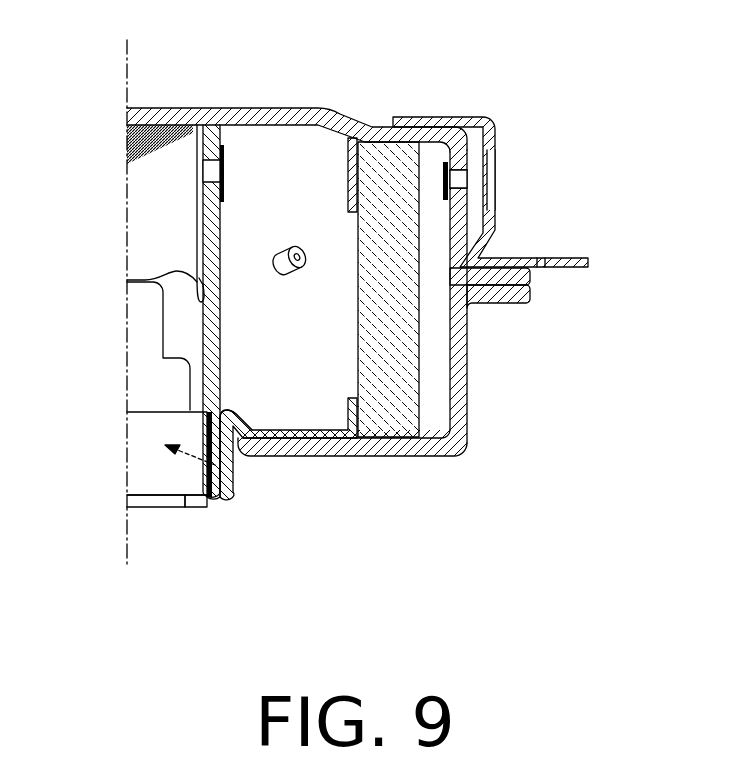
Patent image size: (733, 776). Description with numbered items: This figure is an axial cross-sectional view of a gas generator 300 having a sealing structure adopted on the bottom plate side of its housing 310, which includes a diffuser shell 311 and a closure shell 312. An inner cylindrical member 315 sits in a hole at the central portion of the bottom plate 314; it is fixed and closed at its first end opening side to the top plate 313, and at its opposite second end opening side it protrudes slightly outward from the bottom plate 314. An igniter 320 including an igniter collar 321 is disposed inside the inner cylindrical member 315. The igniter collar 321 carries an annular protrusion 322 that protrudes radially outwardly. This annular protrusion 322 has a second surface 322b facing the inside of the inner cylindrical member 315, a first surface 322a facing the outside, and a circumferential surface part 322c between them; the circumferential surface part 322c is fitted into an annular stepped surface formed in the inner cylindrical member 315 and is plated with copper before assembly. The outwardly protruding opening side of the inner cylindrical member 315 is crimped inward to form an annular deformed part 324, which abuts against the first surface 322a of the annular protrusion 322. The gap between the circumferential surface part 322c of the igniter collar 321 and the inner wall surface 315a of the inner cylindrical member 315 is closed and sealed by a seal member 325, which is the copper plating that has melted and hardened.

The gas generator 300 is at (253, 101).
The housing 310 is at (608, 333).
The diffuser shell 311 is at (498, 275).
The closure shell 312 is at (467, 393).
The top plate 313 is at (302, 108).
The bottom plate 314 is at (340, 457).
The inner cylindrical member 315 is at (222, 221).
The inner wall surface 315a is at (197, 343).
The igniter 320 is at (135, 313).
The igniter collar 321 is at (135, 422).
The annular protrusion 322 is at (235, 468).
The first surface 322a is at (192, 495).
The second surface 322b is at (215, 378).
The circumferential surface part 322c is at (218, 412).
The annular deformed part 324 is at (208, 502).
The seal member 325 is at (195, 482).